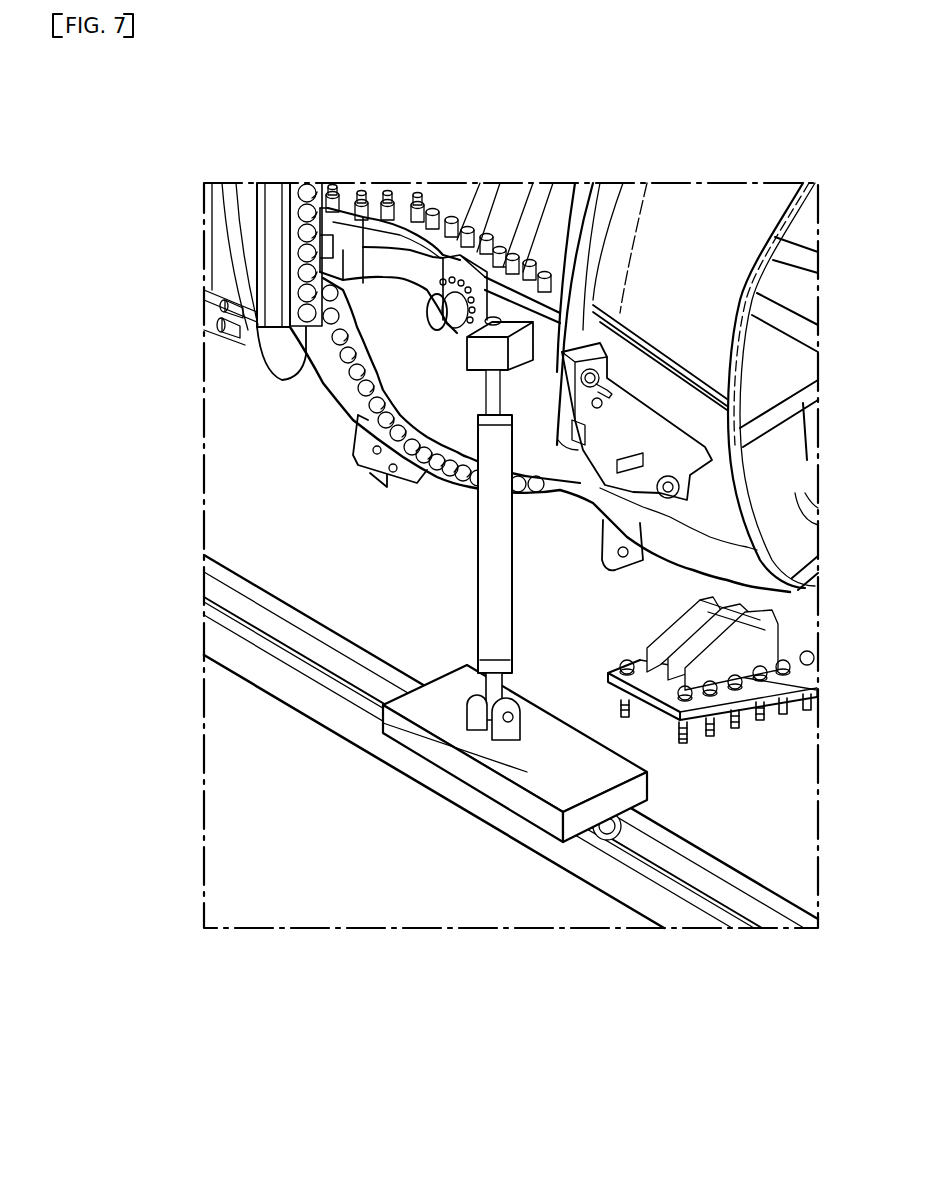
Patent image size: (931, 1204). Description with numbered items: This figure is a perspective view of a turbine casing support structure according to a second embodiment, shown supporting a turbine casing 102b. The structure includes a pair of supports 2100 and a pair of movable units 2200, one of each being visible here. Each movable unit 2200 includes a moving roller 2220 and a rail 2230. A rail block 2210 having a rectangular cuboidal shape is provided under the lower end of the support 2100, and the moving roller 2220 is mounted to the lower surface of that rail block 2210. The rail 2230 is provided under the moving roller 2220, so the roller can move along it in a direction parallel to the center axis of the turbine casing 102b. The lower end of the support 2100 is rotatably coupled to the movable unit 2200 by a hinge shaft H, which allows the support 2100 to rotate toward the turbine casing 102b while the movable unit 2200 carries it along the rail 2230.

The turbine casing 102b is at (697, 243).
The support 2100 is at (497, 580).
The movable unit 2200 is at (548, 1049).
The rail block 2210 is at (537, 773).
The moving roller 2220 is at (647, 820).
The rail 2230 is at (637, 890).
The hinge shaft H is at (467, 730).